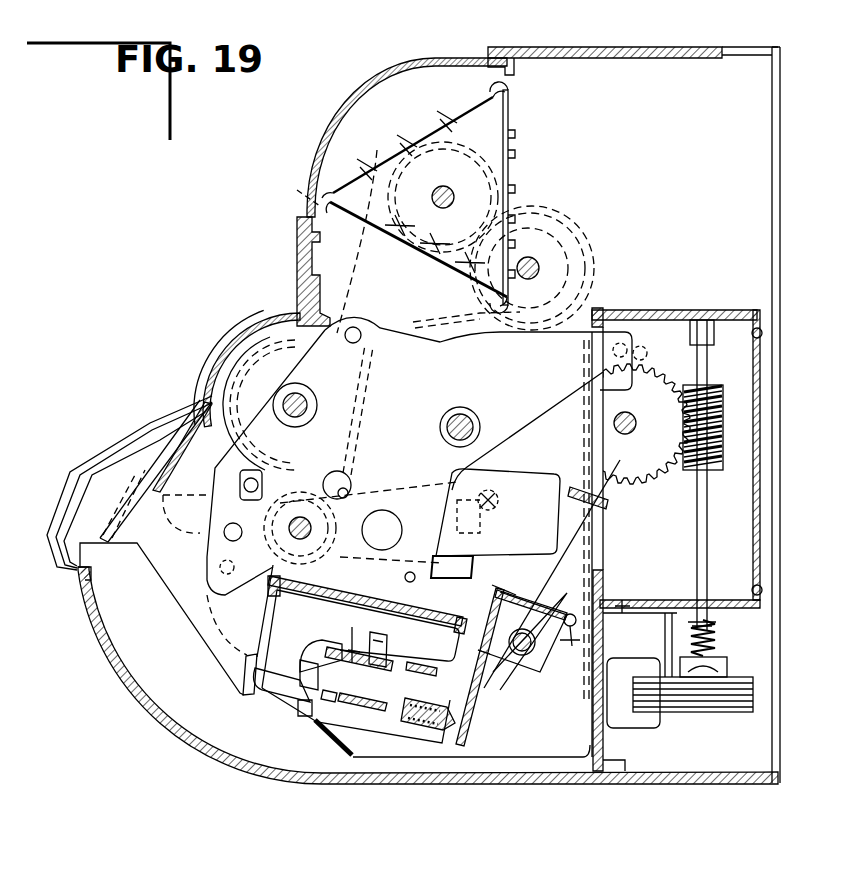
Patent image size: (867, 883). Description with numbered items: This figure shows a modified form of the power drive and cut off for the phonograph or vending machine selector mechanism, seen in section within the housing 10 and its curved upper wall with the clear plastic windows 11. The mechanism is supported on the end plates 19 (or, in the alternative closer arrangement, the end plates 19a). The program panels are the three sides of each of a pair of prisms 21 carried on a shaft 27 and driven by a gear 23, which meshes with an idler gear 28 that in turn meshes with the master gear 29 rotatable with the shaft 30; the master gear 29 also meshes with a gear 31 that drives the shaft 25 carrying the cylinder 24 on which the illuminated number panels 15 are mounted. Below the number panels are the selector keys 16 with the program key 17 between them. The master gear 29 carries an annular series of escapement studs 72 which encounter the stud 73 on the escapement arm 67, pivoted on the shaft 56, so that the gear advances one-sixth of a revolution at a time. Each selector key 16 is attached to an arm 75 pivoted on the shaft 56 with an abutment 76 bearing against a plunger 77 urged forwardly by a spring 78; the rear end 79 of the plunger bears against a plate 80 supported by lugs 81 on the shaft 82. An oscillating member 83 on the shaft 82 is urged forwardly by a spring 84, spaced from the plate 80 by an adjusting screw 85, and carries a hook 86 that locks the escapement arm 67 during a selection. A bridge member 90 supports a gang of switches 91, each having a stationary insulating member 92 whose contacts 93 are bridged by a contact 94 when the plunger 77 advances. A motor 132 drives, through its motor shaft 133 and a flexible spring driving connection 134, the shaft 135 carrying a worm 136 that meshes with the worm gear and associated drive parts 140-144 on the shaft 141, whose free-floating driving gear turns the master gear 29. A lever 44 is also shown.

The casing 10 is at (586, 50).
The clear plastic windows 11 is at (411, 57).
The number panels 15 is at (237, 333).
The selector keys 16 is at (97, 490).
The program key 17 is at (157, 420).
The end plates 19 is at (297, 190).
The end plates 19a is at (597, 285).
The prisms 21 is at (388, 150).
The gear 23 is at (515, 130).
The cylinder 24 is at (277, 347).
The shaft 25 is at (306, 400).
The shaft 27 is at (455, 190).
The idler gear 28 is at (582, 225).
The master gear 29 is at (418, 323).
The shaft 30 is at (455, 410).
The gear 31 is at (362, 432).
The lever 44 is at (533, 410).
The shaft 56 is at (300, 545).
The escapement arm 67 is at (497, 482).
The escapement studs 72 is at (497, 494).
The stud 73 is at (500, 508).
The arm 75 is at (185, 510).
The abutment 76 is at (192, 590).
The plunger 77 is at (271, 688).
The spring 78 is at (436, 700).
The rear end 79 is at (457, 690).
The plate 80 is at (466, 713).
The lugs 81 is at (508, 660).
The shaft 82 is at (521, 656).
The oscillating member 83 is at (540, 675).
The spring 84 is at (558, 603).
The adjusting screw 85 is at (572, 647).
The hook 86 is at (612, 468).
The bridge member 90 is at (353, 590).
The switches 91 is at (303, 716).
The stationary insulating member 92 is at (431, 660).
The contacts 93 is at (352, 630).
The contact 94 is at (318, 656).
The motor 132 is at (722, 712).
The motor shaft 133 is at (720, 656).
The flexible spring driving connection 134 is at (716, 637).
The shaft 135 is at (708, 533).
The worm 136 is at (722, 395).
The worm gear, shaft, clock spring, hub and driving gear 140-144 is at (648, 372).
The shaft 141 is at (636, 421).